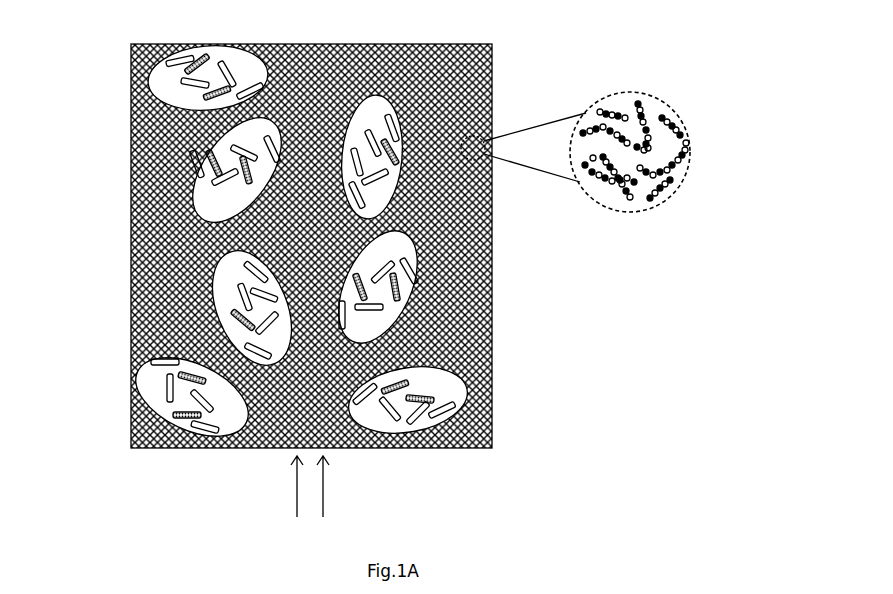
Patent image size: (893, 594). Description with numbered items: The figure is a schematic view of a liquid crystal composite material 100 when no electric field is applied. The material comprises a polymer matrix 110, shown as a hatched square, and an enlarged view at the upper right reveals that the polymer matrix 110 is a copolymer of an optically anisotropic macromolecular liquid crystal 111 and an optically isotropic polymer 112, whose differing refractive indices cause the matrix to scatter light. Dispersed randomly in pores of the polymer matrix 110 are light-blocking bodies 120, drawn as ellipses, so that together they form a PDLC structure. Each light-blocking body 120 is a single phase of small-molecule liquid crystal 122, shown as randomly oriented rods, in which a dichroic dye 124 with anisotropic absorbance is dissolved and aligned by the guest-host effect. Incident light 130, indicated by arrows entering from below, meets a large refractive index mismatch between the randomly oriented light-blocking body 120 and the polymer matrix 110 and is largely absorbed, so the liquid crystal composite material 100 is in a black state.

The liquid crystal composite material 100 is at (80, 29).
The polymer matrix 110 is at (482, 408).
The optically anisotropic macromolecular liquid crystal 111 is at (642, 112).
The optically isotropic polymer 112 is at (652, 140).
The light-blocking body 120 is at (185, 211).
The small-molecule liquid crystal 122 is at (197, 180).
The dichroic dye 124 is at (215, 158).
The incident light 130 is at (341, 486).